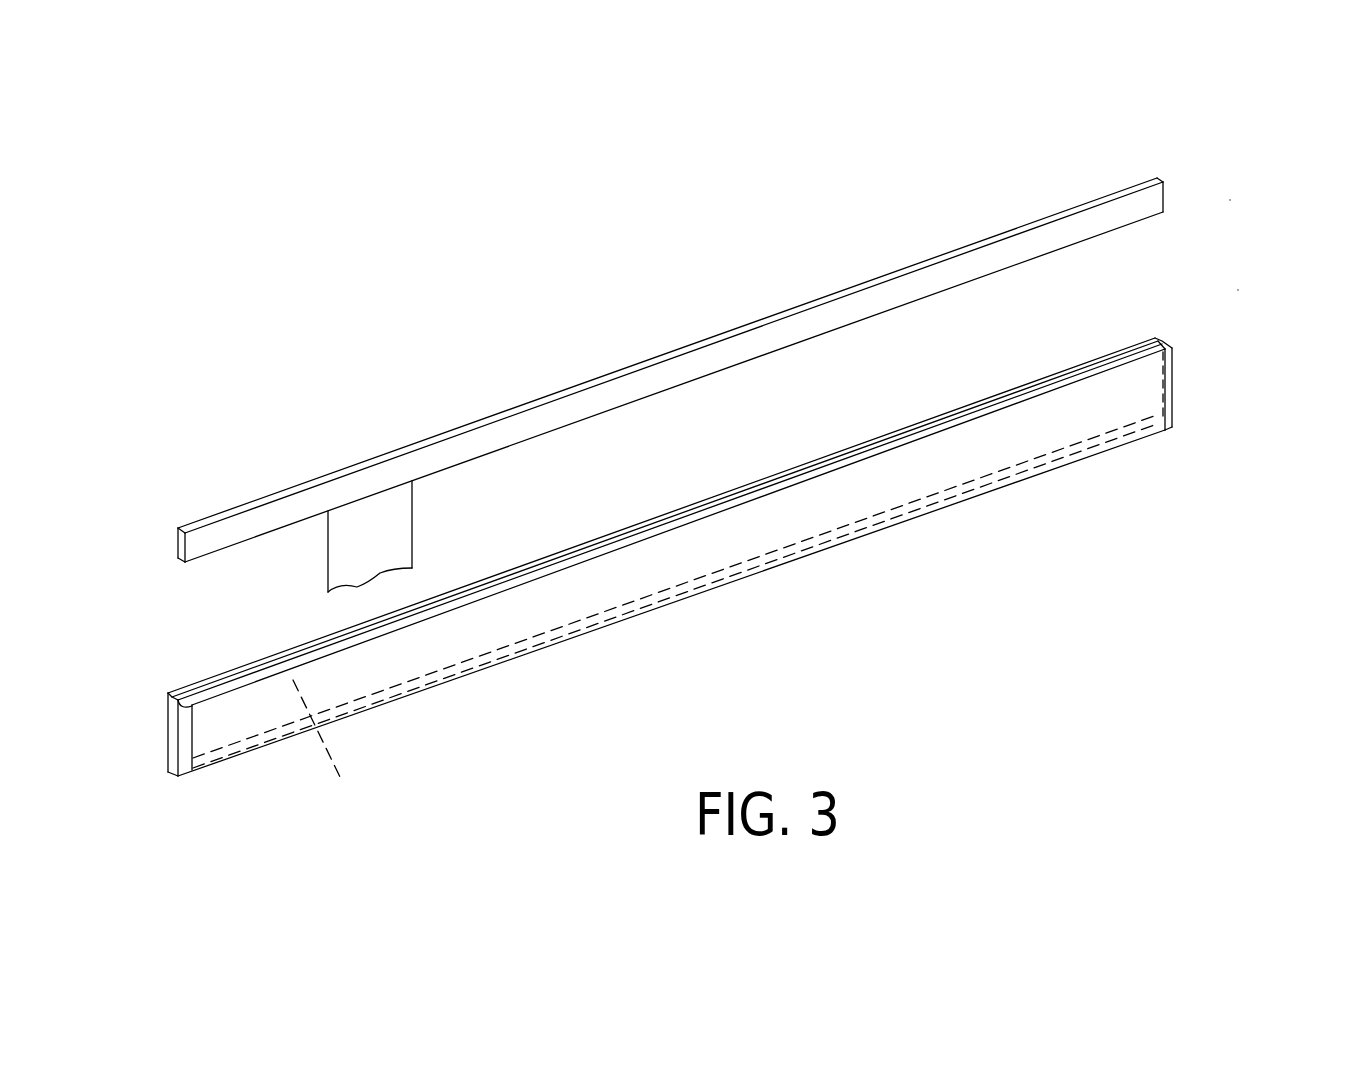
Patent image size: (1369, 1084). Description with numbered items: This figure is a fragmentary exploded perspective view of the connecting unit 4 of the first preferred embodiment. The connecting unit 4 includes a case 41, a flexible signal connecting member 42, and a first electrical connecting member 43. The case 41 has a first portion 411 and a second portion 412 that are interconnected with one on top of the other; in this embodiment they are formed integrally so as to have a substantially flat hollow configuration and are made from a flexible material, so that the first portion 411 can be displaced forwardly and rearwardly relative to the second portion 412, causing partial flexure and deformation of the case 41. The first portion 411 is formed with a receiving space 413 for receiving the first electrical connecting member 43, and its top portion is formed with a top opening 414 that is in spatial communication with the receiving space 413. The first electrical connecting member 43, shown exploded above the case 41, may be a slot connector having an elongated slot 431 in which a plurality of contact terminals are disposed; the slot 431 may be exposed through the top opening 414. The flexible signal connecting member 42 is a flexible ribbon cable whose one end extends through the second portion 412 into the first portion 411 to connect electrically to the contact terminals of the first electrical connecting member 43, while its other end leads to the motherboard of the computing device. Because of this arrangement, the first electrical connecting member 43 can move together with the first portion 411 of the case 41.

The connecting unit 4 is at (1238, 290).
The case 41 is at (1180, 383).
The first portion 411 is at (197, 708).
The second portion 412 is at (190, 773).
The receiving space 413 is at (328, 749).
The top opening 414 is at (1105, 365).
The flexible signal connecting member 42 is at (390, 545).
The first electrical connecting member 43 is at (1167, 175).
The slot 431 is at (1038, 222).